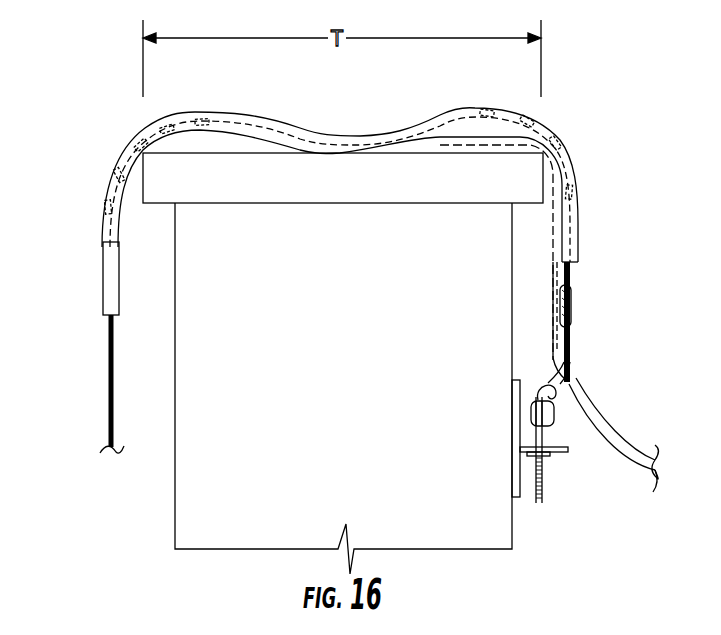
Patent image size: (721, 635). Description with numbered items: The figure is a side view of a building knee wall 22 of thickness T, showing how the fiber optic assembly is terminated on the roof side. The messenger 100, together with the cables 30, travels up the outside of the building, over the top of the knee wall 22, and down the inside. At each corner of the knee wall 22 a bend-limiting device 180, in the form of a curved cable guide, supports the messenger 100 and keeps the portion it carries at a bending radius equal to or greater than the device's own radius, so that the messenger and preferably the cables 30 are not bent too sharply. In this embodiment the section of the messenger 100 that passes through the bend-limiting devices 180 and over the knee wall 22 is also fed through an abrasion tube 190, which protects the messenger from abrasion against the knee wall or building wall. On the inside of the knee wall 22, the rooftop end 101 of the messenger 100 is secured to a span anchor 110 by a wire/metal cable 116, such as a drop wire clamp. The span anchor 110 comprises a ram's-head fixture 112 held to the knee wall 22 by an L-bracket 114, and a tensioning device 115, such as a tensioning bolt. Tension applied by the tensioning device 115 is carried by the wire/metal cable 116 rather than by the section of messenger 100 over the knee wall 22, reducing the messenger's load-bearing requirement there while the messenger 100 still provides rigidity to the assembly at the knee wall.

The knee wall 22 is at (172, 381).
The cables 30 is at (610, 448).
The messenger 100 is at (110, 372).
The rooftop end 101 is at (551, 355).
The span anchor 110 is at (513, 440).
The fixture 112 is at (570, 386).
The L-bracket 114 is at (516, 387).
The tensioning device 115 is at (546, 478).
The wire/metal cable 116 is at (569, 353).
The bend-limiting device 180 is at (172, 118).
The abrasion tube 190 is at (320, 133).